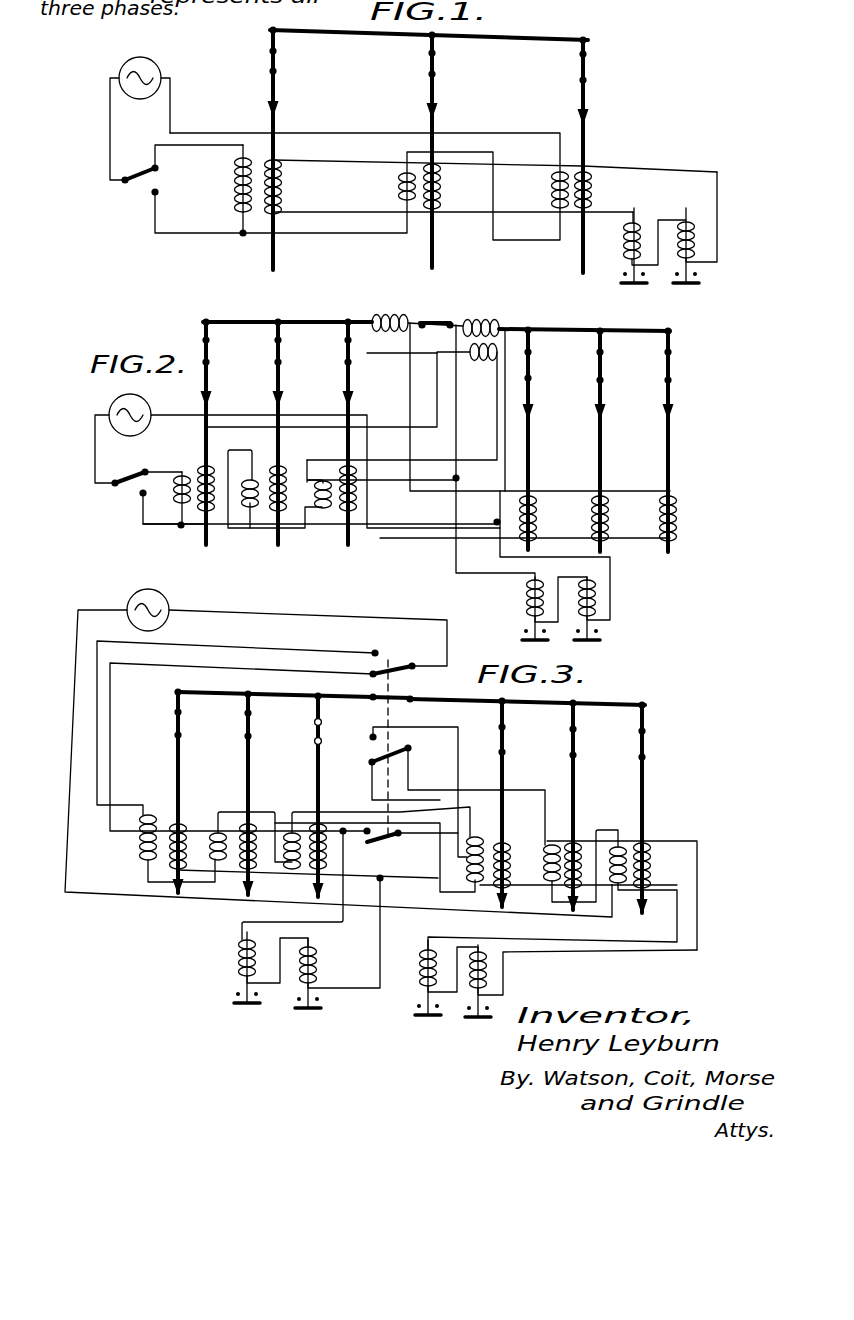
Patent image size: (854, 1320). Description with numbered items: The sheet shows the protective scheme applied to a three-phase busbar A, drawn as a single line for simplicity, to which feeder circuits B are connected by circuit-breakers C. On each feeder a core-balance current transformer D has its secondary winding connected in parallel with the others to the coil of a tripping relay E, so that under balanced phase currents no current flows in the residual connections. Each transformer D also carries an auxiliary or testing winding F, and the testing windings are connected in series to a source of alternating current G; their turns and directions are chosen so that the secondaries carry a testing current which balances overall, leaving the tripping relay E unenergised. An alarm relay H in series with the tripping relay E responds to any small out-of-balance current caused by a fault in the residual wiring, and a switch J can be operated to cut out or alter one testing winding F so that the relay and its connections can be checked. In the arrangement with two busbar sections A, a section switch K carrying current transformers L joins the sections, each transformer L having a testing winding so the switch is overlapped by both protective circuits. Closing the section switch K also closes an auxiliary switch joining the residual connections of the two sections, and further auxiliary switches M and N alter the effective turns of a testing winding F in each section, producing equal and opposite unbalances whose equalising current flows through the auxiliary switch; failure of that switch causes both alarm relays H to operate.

In FIG. 1, the three-phase busbar A is at (508, 37).
In FIG. 2, the three-phase busbar A is at (300, 320).
In FIG. 3, the three-phase busbar A is at (205, 692).
In FIG. 1, the feeder circuit B is at (270, 107).
In FIG. 2, the feeder circuit B is at (210, 395).
In FIG. 3, the feeder circuit B is at (180, 760).
In FIG. 1, the circuit-breaker C is at (277, 60).
In FIG. 2, the circuit-breaker C is at (210, 352).
In FIG. 3, the circuit-breaker C is at (182, 724).
In FIG. 1, the core-balance current transformer D is at (283, 186).
In FIG. 2, the core-balance current transformer D is at (211, 467).
In FIG. 3, the core-balance current transformer D is at (180, 833).
In FIG. 1, the tripping relay E is at (694, 227).
In FIG. 2, the tripping relay E is at (598, 597).
In FIG. 3, the tripping relay E is at (318, 963).
In FIG. 1, the auxiliary (testing) winding F is at (233, 186).
In FIG. 2, the auxiliary (testing) winding F is at (183, 475).
In FIG. 3, the auxiliary (testing) winding F is at (138, 859).
In FIG. 1, the source of alternating current G is at (142, 62).
In FIG. 2, the source of alternating current G is at (143, 428).
In FIG. 3, the source of alternating current G is at (166, 602).
In FIG. 1, the alarm relay H is at (653, 235).
In FIG. 2, the alarm relay H is at (524, 597).
In FIG. 3, the alarm relay H is at (240, 958).
In FIG. 1, the switch J is at (148, 186).
In FIG. 2, the switch J is at (131, 492).
In FIG. 2, the section switch K is at (433, 322).
In FIG. 2, the current transformer on section switch L is at (396, 318).
In FIG. 3, the auxiliary switch M is at (375, 752).
In FIG. 3, the auxiliary switch N is at (398, 670).